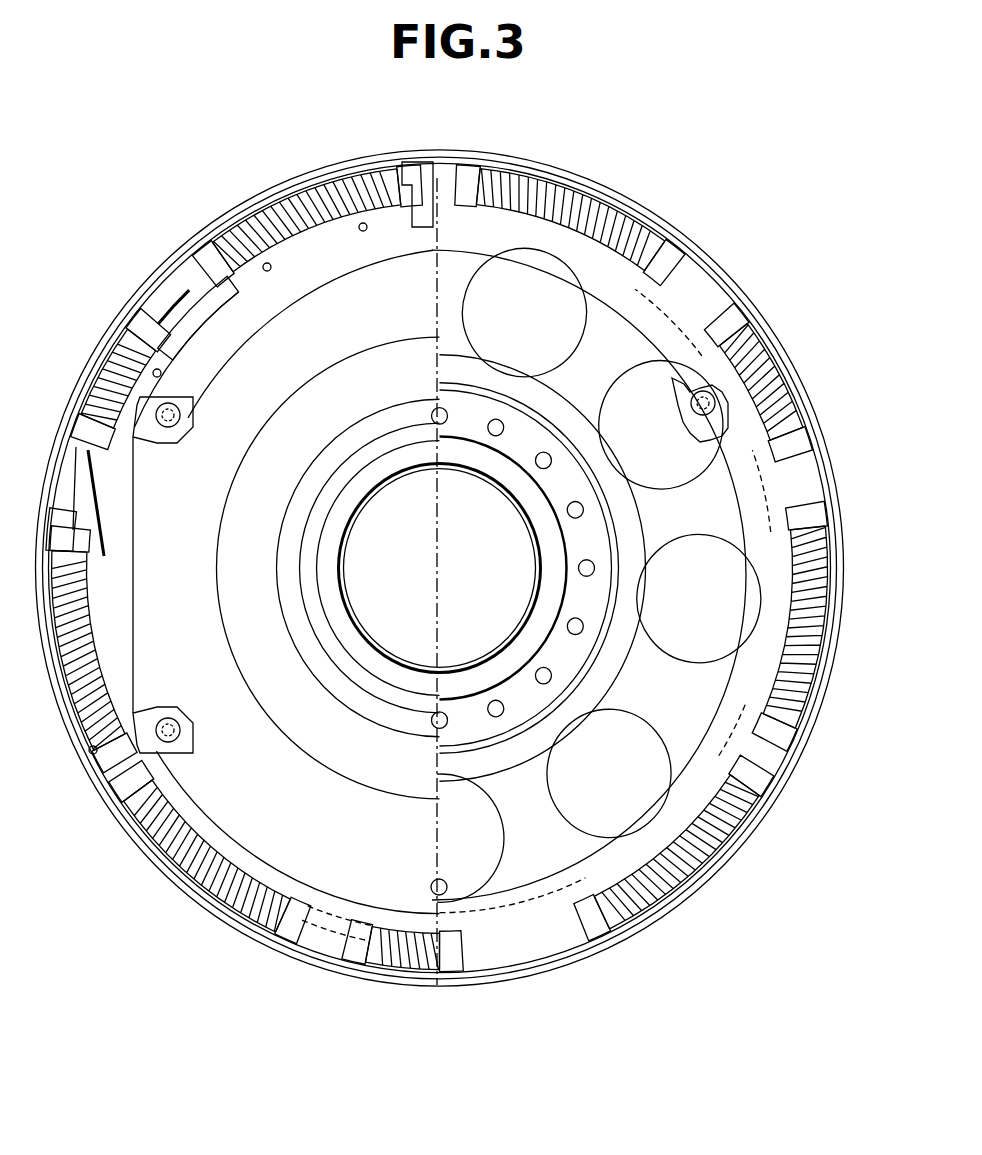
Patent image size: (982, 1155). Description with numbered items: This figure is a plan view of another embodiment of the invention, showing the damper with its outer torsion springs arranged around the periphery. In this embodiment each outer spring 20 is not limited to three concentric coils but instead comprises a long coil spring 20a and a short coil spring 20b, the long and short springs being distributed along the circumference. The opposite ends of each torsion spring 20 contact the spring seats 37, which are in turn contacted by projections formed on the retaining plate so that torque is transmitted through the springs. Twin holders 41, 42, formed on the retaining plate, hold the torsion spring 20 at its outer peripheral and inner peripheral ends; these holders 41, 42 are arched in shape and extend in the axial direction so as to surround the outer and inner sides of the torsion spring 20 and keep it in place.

The outer torsion spring 20 is at (458, 573).
The long coil spring 20a is at (304, 172).
The short coil spring 20b is at (130, 328).
The spring seat 37 is at (130, 800).
The holder 41 is at (246, 205).
The holder 42 is at (323, 242).